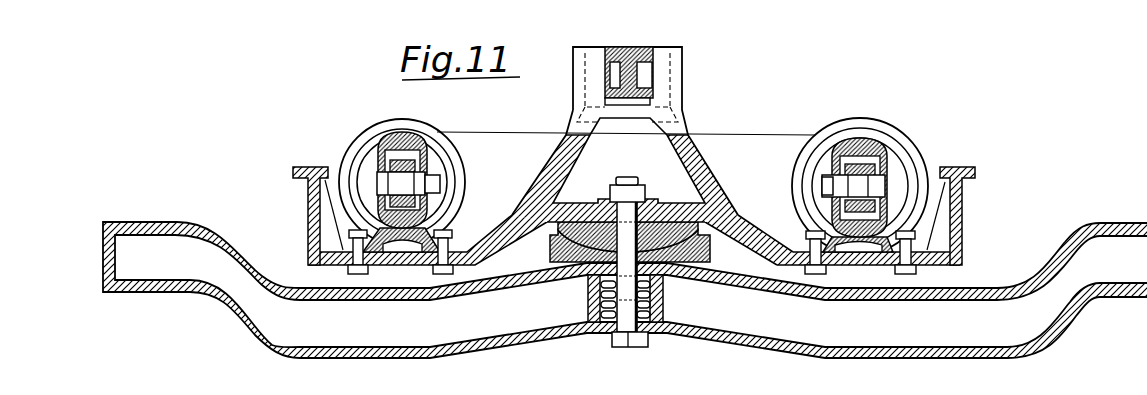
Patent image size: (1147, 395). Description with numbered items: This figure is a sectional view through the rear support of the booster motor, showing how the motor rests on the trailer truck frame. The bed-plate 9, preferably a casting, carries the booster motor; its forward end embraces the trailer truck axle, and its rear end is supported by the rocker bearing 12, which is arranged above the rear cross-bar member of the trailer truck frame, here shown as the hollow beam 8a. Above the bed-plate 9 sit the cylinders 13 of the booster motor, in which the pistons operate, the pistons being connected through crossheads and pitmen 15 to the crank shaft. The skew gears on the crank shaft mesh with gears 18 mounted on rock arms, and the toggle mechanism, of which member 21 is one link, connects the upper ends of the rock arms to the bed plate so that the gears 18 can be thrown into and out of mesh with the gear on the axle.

The bolster beam 8a is at (1030, 343).
The bed-plate 9 is at (632, 134).
The rocker bearing 12 is at (687, 205).
The cylinders 13 is at (355, 150).
The pitmen 15 is at (413, 150).
The gears 18 is at (662, 286).
The toggle mechanism member 21 is at (632, 78).